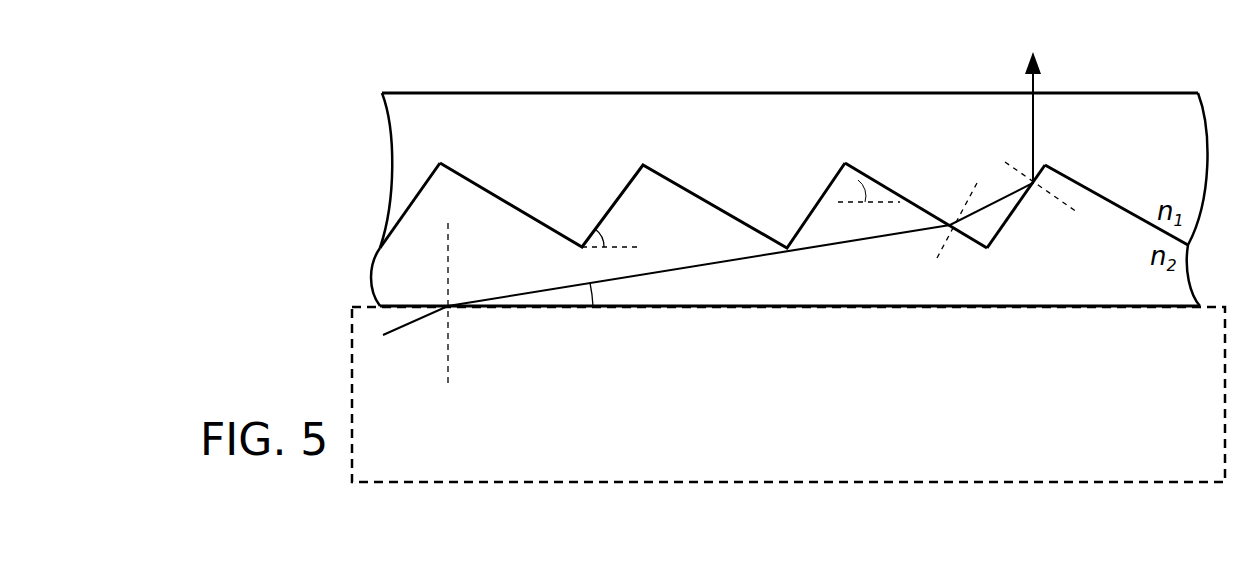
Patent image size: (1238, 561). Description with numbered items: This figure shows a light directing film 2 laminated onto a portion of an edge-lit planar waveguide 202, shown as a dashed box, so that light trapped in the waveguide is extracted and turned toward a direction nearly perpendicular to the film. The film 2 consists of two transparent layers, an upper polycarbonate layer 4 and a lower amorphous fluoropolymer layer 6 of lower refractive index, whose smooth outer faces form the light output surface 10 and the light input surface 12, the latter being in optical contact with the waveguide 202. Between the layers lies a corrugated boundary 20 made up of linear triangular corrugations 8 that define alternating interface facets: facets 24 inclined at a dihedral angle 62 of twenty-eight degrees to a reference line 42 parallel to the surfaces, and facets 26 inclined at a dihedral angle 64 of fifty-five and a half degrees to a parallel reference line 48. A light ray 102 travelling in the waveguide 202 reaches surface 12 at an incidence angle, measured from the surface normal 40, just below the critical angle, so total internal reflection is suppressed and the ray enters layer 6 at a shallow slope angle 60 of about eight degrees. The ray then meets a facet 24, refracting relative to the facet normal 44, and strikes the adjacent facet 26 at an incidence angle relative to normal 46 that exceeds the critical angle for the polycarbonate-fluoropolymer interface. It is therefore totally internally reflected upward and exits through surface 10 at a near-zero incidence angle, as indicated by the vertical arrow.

The light directing film 2 is at (1168, 64).
The layer 4 is at (420, 146).
The layer 6 is at (388, 284).
The corrugations 8 is at (640, 163).
The surface 10 is at (446, 92).
The surface 12 is at (1075, 304).
The corrugated boundary 20 is at (382, 228).
The facet 24 is at (963, 238).
The facet 26 is at (1008, 222).
The surface normal 40 is at (449, 352).
The reference line 42 is at (872, 203).
The normal 44 is at (932, 265).
The normal 46 is at (997, 158).
The reference line 48 is at (653, 246).
The slope angle 60 is at (600, 298).
The dihedral angle 62 is at (858, 192).
The dihedral angle 64 is at (610, 235).
The light ray 102 is at (408, 328).
The planar waveguide 202 is at (527, 483).